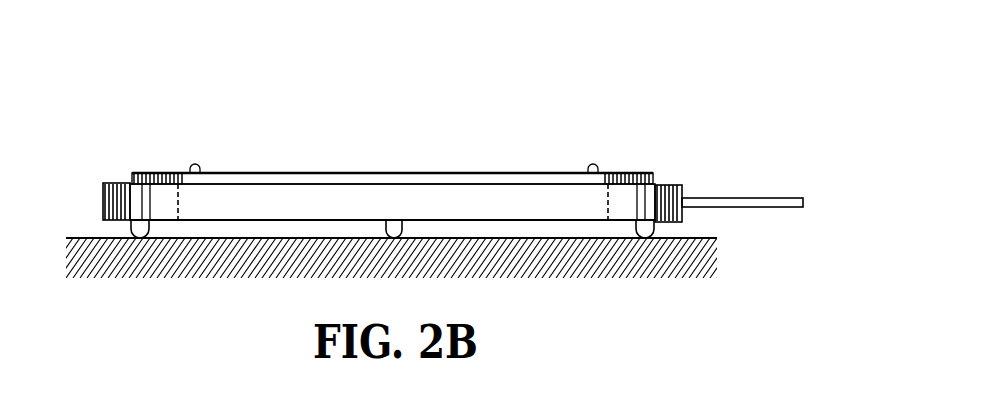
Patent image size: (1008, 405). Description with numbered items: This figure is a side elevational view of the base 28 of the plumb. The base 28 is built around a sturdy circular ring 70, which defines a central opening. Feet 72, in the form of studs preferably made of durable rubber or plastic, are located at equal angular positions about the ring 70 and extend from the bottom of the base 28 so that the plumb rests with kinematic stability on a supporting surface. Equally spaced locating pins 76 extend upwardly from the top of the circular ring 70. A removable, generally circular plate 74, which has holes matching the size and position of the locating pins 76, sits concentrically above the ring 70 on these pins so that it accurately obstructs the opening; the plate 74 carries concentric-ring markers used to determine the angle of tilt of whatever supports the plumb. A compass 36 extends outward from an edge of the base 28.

The base 28 is at (658, 82).
The circular ring 70 is at (512, 203).
The circular plate 74 is at (455, 177).
The locating pins 76 is at (197, 163).
The feet 72 is at (645, 236).
The compass 36 is at (790, 197).